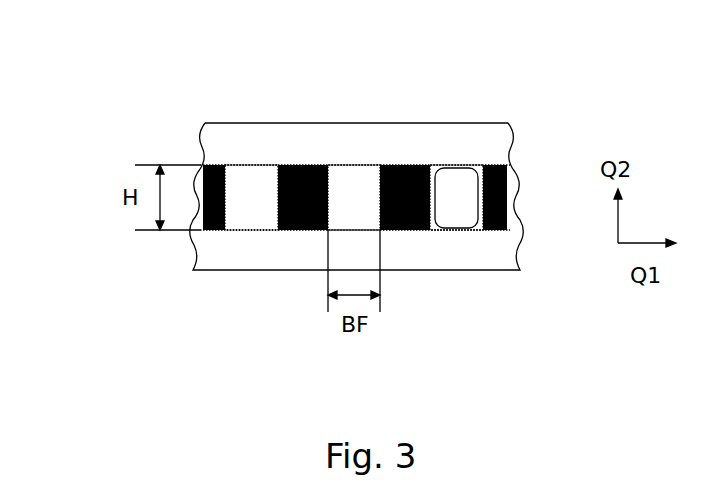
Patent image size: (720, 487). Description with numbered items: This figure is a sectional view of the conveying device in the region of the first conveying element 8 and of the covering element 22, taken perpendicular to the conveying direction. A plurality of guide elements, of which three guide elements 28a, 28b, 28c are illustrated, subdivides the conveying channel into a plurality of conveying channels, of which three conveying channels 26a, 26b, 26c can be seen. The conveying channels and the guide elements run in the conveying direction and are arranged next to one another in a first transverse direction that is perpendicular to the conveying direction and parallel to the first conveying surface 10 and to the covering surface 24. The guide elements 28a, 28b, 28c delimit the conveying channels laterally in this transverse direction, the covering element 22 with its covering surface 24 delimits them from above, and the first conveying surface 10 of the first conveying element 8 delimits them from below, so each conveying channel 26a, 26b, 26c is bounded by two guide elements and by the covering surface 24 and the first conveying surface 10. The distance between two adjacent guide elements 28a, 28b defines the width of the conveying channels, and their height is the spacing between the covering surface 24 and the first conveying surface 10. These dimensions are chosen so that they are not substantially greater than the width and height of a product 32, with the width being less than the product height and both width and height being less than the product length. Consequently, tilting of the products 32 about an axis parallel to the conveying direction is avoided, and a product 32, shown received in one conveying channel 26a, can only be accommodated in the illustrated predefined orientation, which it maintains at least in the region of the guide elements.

The first conveying element 8 is at (207, 257).
The first conveying surface 10 is at (258, 232).
The covering element 22 is at (208, 135).
The covering surface 24 is at (248, 167).
The conveying channel 26a is at (477, 165).
The conveying channel 26b is at (353, 183).
The conveying channel 26c is at (263, 182).
The guide element 28a is at (508, 188).
The guide element 28b is at (410, 165).
The guide element 28c is at (306, 165).
The product 32 is at (457, 215).